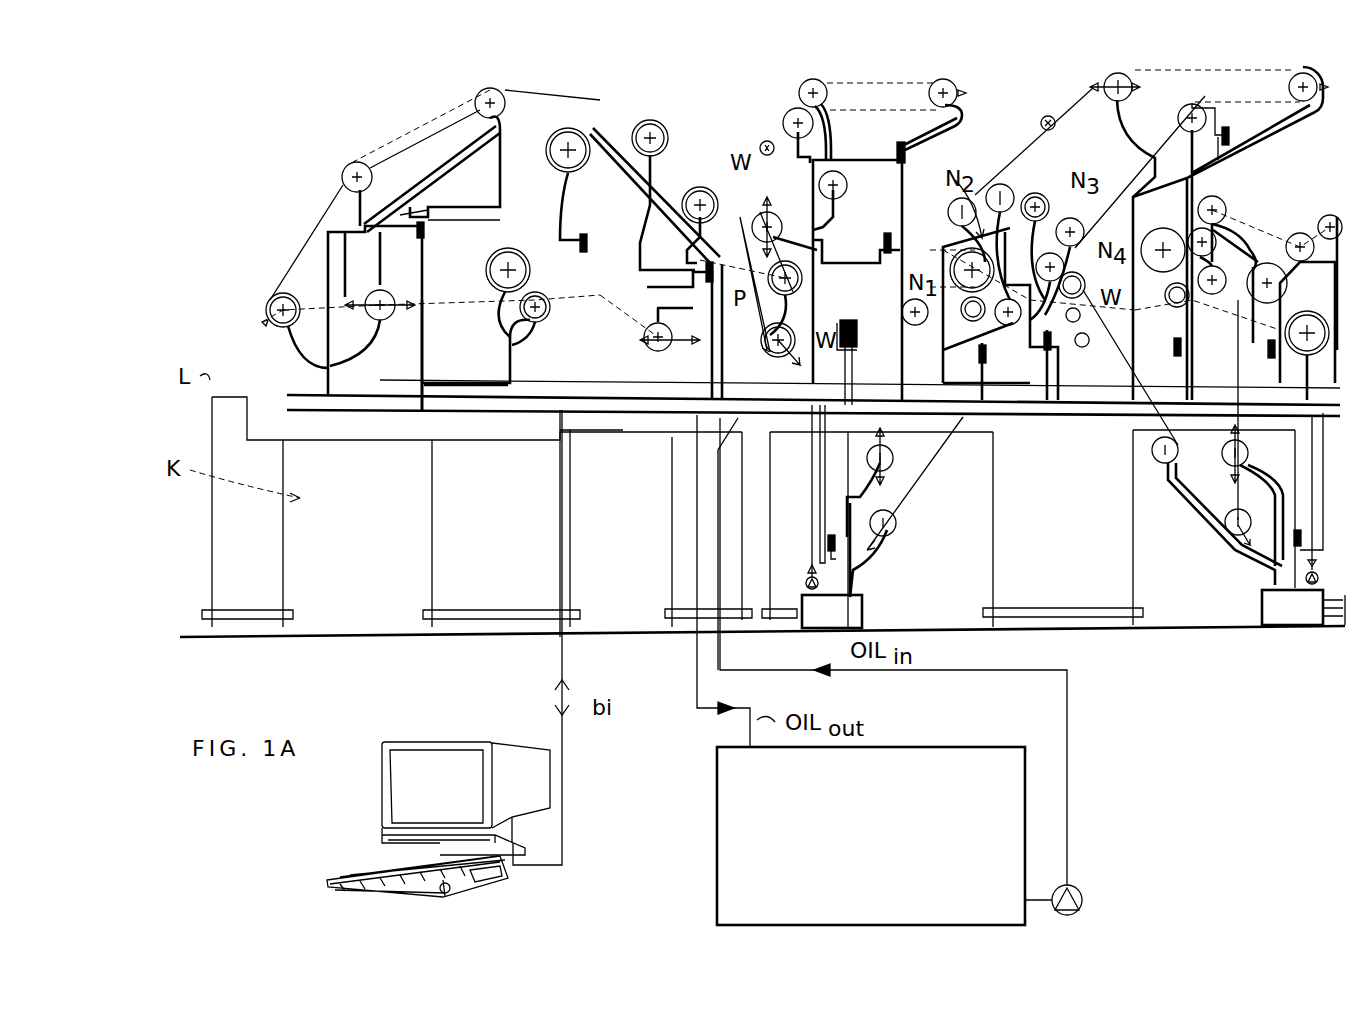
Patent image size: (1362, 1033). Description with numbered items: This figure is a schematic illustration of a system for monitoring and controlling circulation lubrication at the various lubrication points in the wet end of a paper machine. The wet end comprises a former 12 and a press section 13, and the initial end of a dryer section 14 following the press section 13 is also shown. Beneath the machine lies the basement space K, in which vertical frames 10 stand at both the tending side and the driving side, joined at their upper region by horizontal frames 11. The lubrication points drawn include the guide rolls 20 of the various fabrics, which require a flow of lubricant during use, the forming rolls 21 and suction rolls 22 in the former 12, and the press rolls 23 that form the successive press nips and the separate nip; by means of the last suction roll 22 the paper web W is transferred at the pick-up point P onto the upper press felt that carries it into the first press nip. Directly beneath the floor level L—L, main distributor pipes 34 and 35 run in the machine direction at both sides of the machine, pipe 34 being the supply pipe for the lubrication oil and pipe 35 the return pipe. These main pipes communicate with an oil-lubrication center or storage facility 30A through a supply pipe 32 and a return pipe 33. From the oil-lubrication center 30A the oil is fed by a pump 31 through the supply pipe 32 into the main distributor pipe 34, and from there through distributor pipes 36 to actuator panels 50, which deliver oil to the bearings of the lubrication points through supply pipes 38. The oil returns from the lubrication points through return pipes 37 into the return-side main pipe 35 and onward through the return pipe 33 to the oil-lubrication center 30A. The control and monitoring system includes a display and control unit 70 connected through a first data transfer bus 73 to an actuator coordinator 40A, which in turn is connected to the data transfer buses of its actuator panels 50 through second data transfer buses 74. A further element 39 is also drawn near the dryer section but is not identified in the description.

The vertical frames 10 is at (295, 520).
The horizontal frames 11 is at (357, 438).
The former 12 is at (560, 110).
The press section 13 is at (990, 137).
The dryer section 14 is at (1312, 212).
The guide rolls 20 is at (380, 152).
The forming rolls 21 is at (484, 268).
The suction rolls 22 is at (700, 188).
The press rolls 23 is at (1000, 230).
The oil-lubrication center 30A is at (937, 751).
The pump 31 is at (1080, 890).
The supply pipe 32 is at (1074, 720).
The return pipe 33 is at (692, 680).
The main distributor pipe 34 is at (501, 432).
The main distributor pipe 35 is at (607, 432).
The distributor pipes 36 is at (422, 352).
The return pipes 37 is at (315, 354).
The supply pipes 38 is at (477, 202).
The lubrication unit 39 is at (1260, 611).
The actuator coordinator 40A is at (861, 345).
The actuator panels 50 is at (427, 230).
The display and control unit 70 is at (448, 748).
The first data transfer bus 73 is at (732, 308).
The second data transfer buses 74 is at (486, 382).